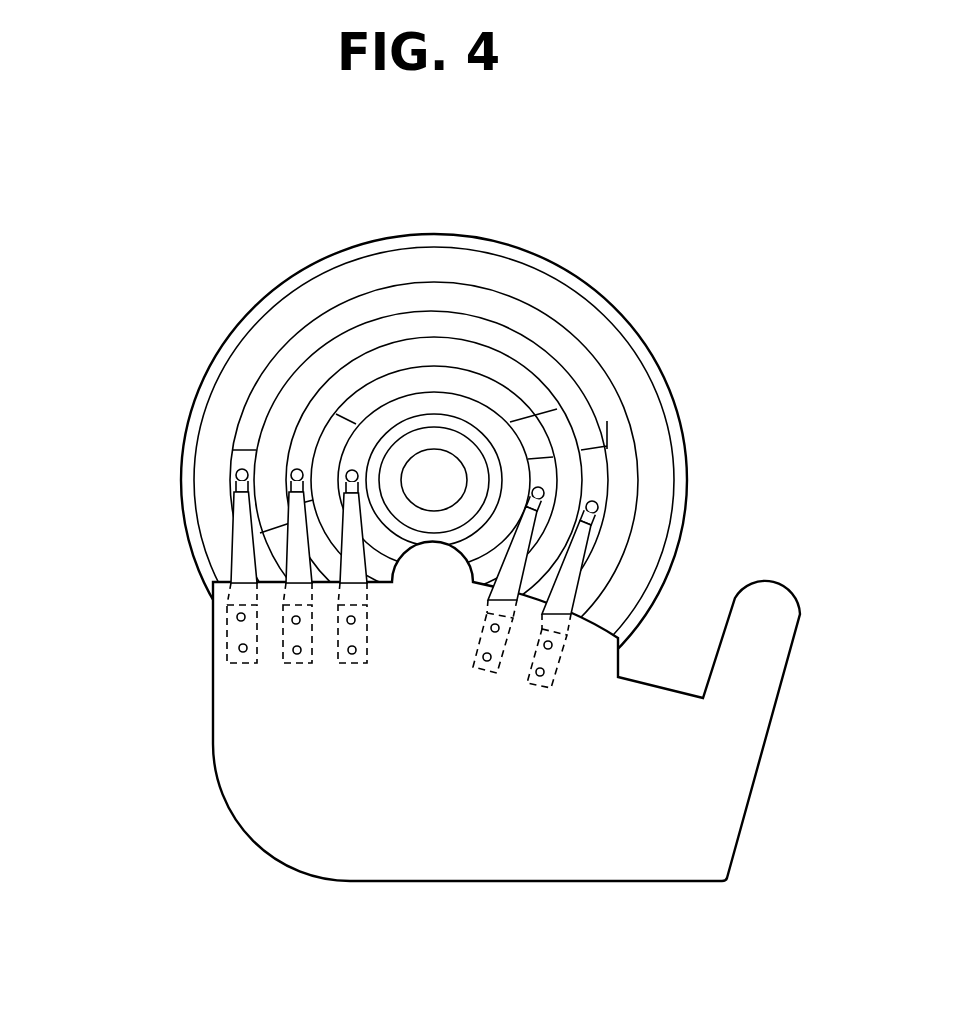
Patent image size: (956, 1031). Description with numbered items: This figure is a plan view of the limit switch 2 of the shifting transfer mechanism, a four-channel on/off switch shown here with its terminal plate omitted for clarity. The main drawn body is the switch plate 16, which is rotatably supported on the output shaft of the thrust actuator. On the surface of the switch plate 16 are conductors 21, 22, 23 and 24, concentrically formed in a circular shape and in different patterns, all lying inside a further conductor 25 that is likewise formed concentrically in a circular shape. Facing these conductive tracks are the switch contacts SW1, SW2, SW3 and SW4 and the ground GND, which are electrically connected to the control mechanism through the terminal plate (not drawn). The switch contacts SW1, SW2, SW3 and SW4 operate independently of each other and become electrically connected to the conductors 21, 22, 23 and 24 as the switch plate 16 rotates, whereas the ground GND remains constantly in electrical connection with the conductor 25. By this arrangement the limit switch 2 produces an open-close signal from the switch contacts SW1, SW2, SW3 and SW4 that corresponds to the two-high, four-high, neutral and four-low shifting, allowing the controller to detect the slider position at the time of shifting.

The limit switch 2 is at (442, 440).
The switch plate 16 is at (580, 284).
The conductor 21 is at (240, 469).
The conductor 22 is at (587, 426).
The conductor 23 is at (317, 412).
The conductor 24 is at (533, 437).
The conductor 25 is at (395, 408).
The switch contact SW1 is at (575, 603).
The switch contact SW2 is at (300, 562).
The switch contact SW3 is at (242, 556).
The switch contact SW4 is at (522, 596).
The ground GND is at (350, 563).